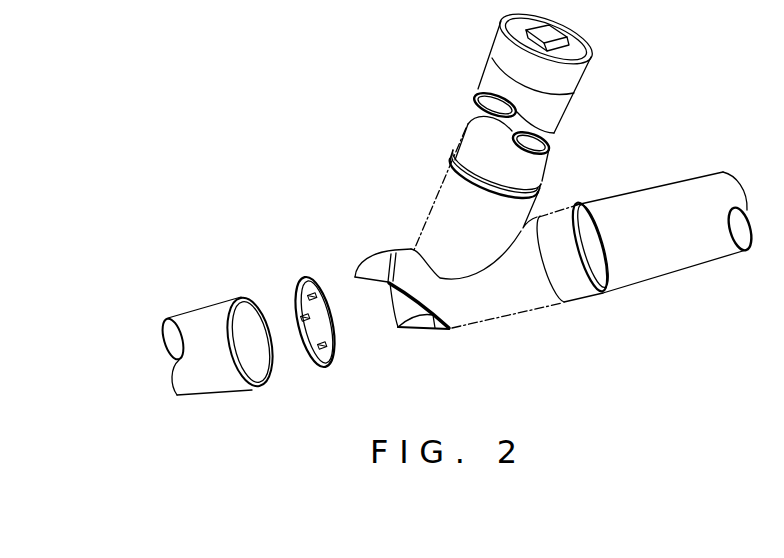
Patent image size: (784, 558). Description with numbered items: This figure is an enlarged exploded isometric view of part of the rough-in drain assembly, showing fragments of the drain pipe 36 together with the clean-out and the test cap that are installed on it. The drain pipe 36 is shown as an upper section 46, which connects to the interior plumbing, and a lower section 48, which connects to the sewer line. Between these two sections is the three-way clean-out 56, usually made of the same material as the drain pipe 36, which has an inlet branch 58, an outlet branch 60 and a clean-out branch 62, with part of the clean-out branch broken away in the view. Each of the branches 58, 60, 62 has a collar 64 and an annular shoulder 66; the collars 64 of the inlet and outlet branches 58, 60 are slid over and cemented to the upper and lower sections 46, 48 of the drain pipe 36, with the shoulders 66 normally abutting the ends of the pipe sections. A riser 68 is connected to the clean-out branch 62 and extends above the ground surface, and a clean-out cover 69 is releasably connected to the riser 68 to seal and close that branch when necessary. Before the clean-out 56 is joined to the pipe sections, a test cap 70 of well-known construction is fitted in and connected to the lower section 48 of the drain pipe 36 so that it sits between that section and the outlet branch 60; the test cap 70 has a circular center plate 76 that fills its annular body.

The drain pipe 36 is at (645, 286).
The upper section 46 is at (678, 183).
The lower section 48 is at (216, 305).
The three-way clean-out 56 is at (594, 63).
The inlet branch 58 is at (522, 298).
The outlet branch 60 is at (413, 248).
The clean-out branch 62 is at (448, 228).
The collar 64 is at (395, 250).
The annular shoulder 66 is at (403, 330).
The riser 68 is at (466, 130).
The clean-out cover 69 is at (572, 24).
The test cap 70 is at (302, 283).
The circular center plate 76 is at (335, 340).